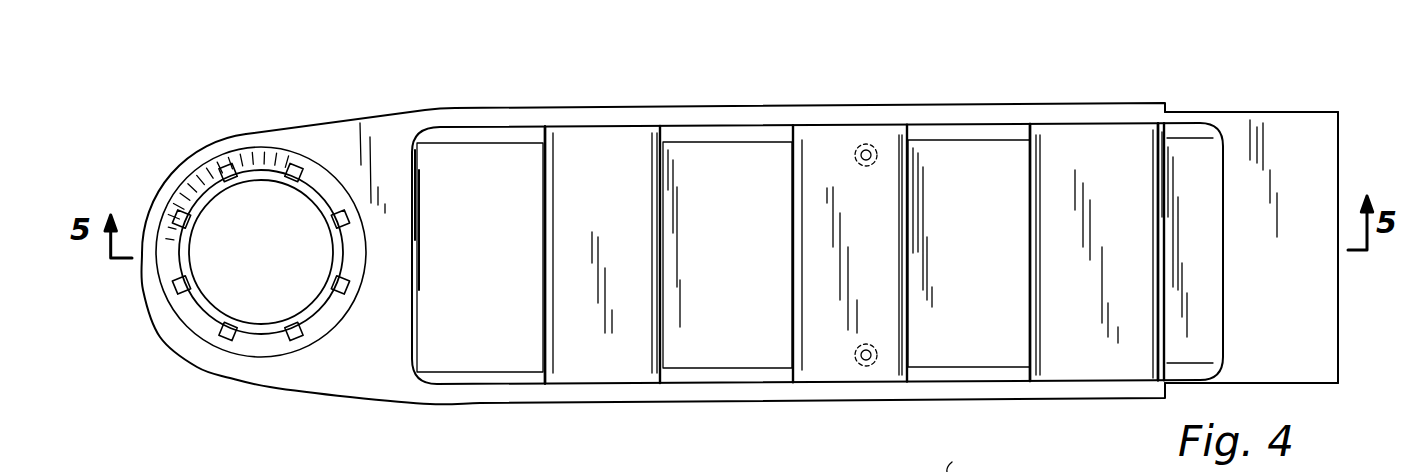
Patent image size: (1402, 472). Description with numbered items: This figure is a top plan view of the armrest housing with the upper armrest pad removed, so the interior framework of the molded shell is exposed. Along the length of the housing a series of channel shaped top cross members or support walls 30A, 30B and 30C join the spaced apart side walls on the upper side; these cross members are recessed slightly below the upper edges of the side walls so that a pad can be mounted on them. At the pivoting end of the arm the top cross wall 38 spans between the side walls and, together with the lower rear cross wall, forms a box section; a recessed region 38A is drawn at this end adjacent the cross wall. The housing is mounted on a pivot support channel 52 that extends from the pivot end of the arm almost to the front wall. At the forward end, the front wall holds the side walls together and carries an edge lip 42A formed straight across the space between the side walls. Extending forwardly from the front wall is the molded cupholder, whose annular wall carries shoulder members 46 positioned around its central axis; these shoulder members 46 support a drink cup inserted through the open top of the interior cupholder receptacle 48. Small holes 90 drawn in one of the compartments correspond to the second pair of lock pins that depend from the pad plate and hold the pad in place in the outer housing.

The top cross member 30A is at (1058, 140).
The top cross member 30B is at (885, 215).
The top cross member 30C is at (643, 202).
The top cross wall 38 is at (1315, 281).
The end cap recess 38A is at (1222, 213).
The edge lip 42A is at (414, 341).
The shoulder member 46 is at (234, 325).
The cupholder receptacle 48 is at (257, 352).
The pivot support channel 52 is at (700, 350).
The lock pins 90 is at (863, 146).